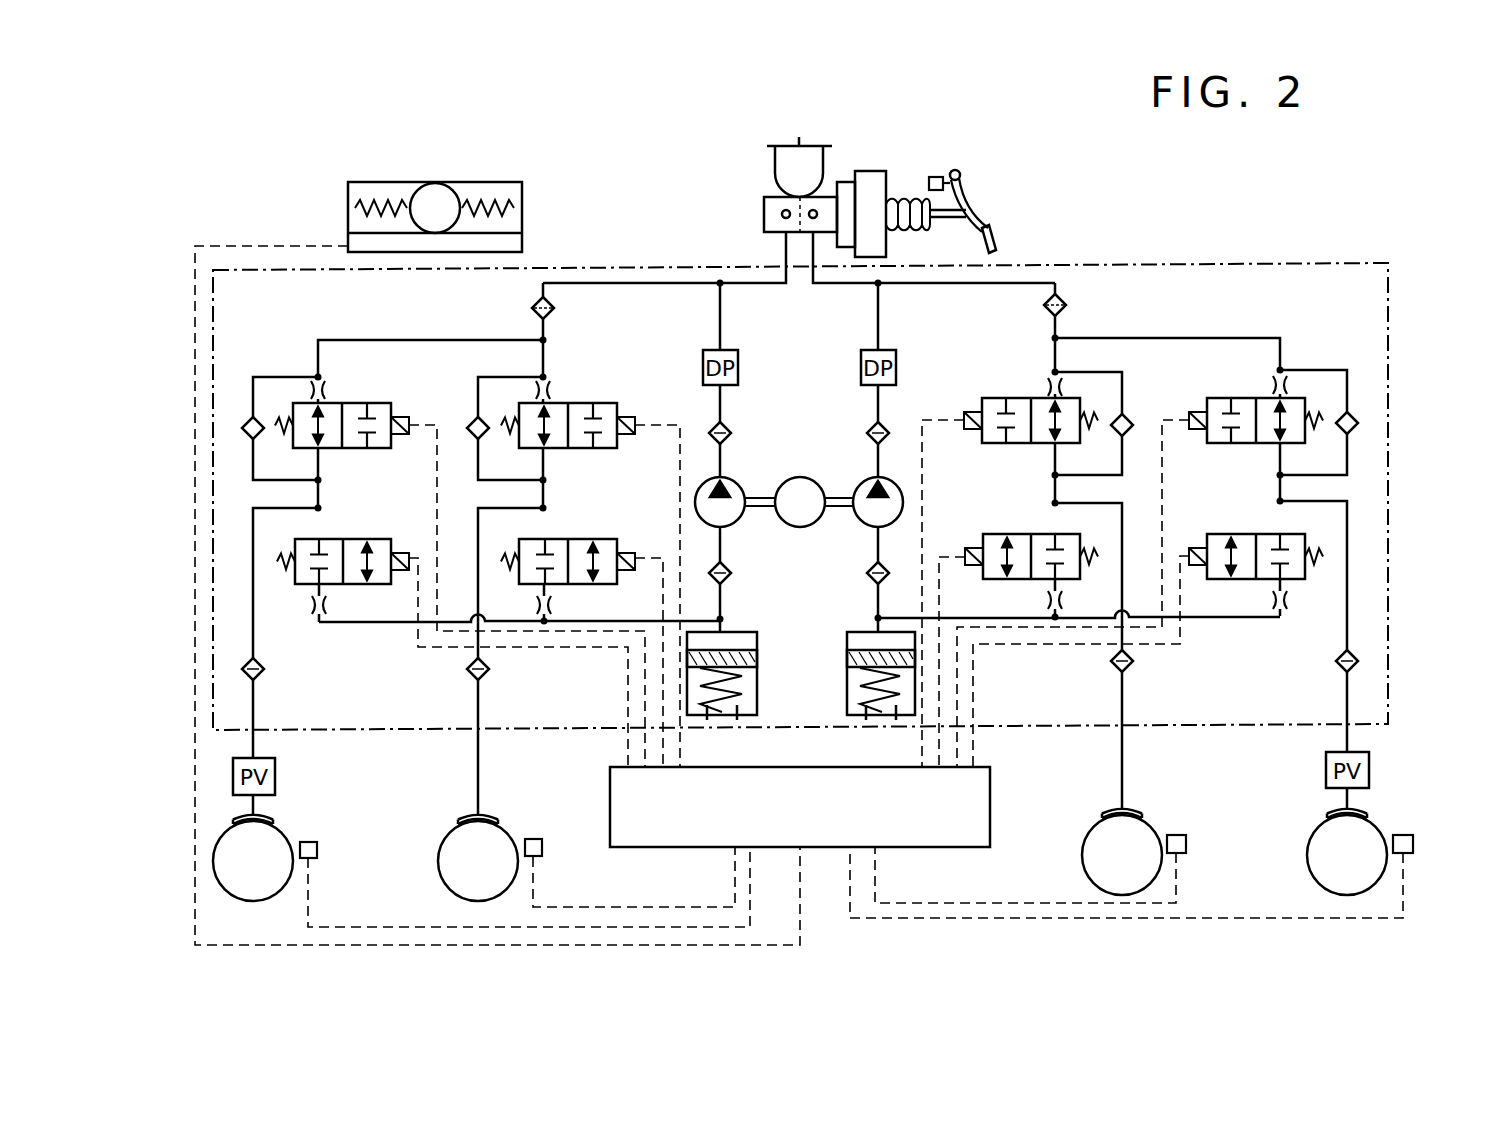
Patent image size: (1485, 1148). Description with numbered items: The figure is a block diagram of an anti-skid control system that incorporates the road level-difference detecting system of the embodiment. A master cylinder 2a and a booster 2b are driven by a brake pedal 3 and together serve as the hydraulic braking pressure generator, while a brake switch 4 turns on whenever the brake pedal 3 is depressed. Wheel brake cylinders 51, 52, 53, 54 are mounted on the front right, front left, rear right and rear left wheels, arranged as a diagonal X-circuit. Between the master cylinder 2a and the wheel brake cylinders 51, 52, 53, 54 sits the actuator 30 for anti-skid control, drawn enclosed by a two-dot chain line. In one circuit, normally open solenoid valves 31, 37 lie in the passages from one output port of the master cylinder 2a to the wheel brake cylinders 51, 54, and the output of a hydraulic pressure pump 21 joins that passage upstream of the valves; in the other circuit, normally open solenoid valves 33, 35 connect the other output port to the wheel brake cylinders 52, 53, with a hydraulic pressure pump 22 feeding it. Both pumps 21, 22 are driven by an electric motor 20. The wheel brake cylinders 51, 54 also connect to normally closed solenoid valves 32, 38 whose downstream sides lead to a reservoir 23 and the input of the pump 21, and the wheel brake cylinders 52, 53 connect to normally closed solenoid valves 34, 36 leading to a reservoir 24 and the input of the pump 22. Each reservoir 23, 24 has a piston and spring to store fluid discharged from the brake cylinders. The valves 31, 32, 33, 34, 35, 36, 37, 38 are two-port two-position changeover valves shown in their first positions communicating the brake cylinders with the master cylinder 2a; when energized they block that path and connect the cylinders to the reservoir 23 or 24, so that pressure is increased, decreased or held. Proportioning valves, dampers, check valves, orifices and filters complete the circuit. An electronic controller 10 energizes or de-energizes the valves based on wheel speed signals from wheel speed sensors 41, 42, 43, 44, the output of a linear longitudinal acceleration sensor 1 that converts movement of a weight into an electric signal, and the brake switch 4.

The linear longitudinal acceleration sensor 1 is at (520, 182).
The master cylinder 2a is at (764, 206).
The booster 2b is at (866, 171).
The brake pedal 3 is at (969, 220).
The brake switch 4 is at (935, 177).
The electronic controller 10 is at (991, 786).
The electric motor 20 is at (800, 527).
The hydraulic pressure pump 21 is at (742, 482).
The hydraulic pressure pump 22 is at (860, 482).
The reservoir 23 is at (738, 632).
The reservoir 24 is at (866, 632).
The actuator 30 is at (1155, 263).
The normally open solenoid valve 31 is at (568, 403).
The normally closed solenoid valve 32 is at (570, 539).
The normally open solenoid valve 33 is at (1032, 398).
The normally closed solenoid valve 34 is at (1030, 534).
The normally open solenoid valve 35 is at (1256, 398).
The normally closed solenoid valve 36 is at (1255, 534).
The normally open solenoid valve 37 is at (343, 403).
The normally closed solenoid valve 38 is at (345, 539).
The wheel speed sensor 41 is at (543, 840).
The wheel speed sensor 42 is at (1187, 836).
The wheel speed sensor 43 is at (1414, 836).
The wheel speed sensor 44 is at (318, 842).
The wheel brake cylinder 51 is at (501, 821).
The wheel brake cylinder 52 is at (1144, 816).
The wheel brake cylinder 53 is at (1369, 816).
The wheel brake cylinder 54 is at (276, 821).